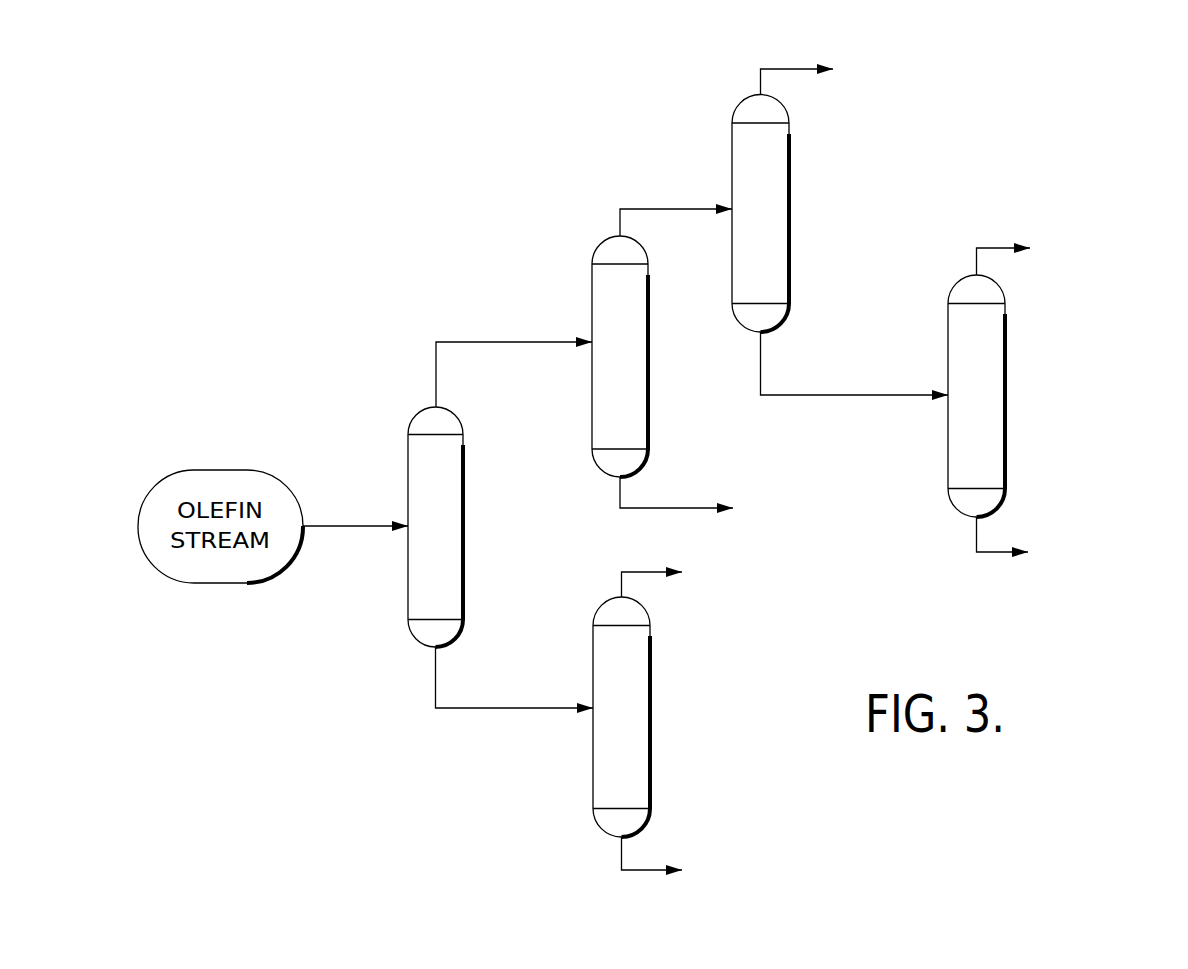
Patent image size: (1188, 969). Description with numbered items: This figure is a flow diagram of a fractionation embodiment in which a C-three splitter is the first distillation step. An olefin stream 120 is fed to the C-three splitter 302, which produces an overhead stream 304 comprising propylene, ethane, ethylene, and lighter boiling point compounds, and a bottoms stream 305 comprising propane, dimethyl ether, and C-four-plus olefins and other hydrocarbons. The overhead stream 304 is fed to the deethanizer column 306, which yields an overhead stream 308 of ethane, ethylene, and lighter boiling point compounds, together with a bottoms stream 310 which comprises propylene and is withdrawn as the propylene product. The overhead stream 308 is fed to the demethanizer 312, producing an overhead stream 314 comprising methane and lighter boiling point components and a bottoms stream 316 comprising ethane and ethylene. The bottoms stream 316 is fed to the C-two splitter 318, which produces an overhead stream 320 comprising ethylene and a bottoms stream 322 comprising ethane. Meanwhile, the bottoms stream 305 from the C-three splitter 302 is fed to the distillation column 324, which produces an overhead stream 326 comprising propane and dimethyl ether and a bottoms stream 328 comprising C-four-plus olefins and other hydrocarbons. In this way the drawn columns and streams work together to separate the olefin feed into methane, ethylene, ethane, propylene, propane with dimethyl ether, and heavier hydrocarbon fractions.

The olefin stream 120 is at (355, 527).
The C3 splitter 302 is at (435, 527).
The overhead stream 304 is at (497, 340).
The bottoms stream 305 is at (460, 710).
The deethanizer column 306 is at (620, 356).
The overhead stream 308 is at (617, 228).
The bottoms stream 310 is at (637, 510).
The demethanizer 312 is at (760, 214).
The overhead stream 314 is at (780, 66).
The bottoms stream 316 is at (800, 395).
The C2 splitter 318 is at (976, 396).
The overhead stream 320 is at (995, 246).
The bottoms stream 322 is at (985, 553).
The distillation column 324 is at (621, 717).
The overhead stream 326 is at (617, 590).
The bottoms stream 328 is at (637, 872).